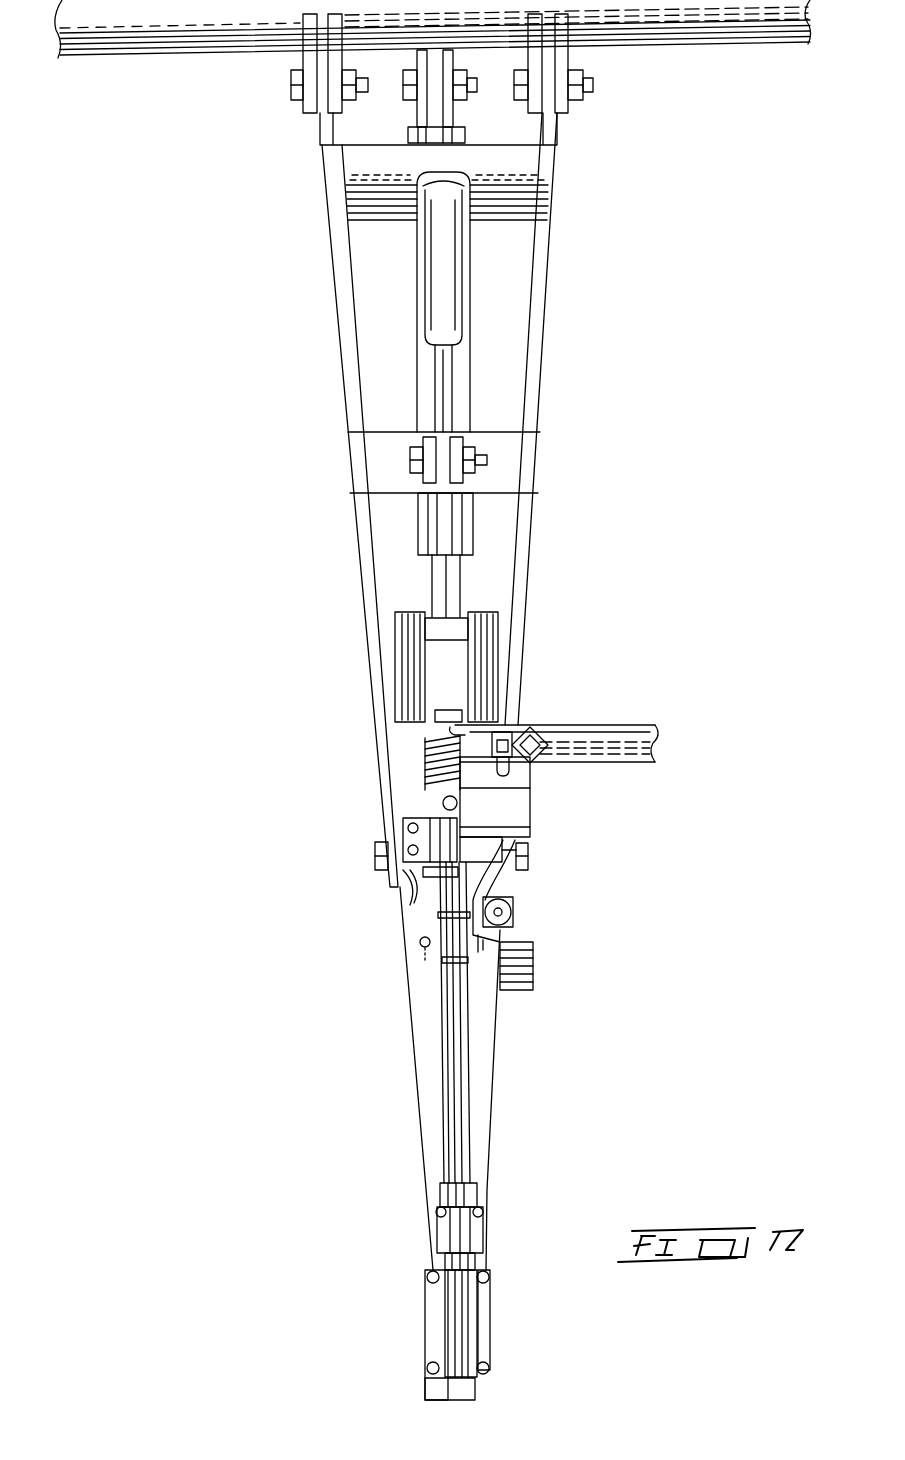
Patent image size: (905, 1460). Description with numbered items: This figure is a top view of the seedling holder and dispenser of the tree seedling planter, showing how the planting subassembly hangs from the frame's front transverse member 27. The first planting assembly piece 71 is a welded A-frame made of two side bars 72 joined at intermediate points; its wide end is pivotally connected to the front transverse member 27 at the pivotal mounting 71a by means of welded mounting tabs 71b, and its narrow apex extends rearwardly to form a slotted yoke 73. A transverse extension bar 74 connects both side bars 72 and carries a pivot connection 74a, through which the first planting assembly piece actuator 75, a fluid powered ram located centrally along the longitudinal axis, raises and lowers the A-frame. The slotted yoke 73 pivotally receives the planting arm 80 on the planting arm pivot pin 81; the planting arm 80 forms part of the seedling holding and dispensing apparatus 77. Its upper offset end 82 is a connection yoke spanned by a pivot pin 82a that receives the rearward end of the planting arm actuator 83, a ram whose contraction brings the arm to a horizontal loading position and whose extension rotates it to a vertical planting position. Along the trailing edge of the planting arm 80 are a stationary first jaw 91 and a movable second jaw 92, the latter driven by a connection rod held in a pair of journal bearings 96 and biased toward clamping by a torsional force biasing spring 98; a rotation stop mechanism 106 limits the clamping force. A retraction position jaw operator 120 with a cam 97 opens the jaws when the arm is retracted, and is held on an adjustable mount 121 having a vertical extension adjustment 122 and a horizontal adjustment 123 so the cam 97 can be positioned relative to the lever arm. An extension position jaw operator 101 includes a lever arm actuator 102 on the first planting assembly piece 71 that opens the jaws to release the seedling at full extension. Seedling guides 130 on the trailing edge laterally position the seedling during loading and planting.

The front transverse member 27 is at (113, 25).
The first planting assembly piece 71 is at (728, 452).
The pivotal mounting 71a is at (290, 85).
The mounting tabs 71b is at (310, 60).
The side bars 72 is at (348, 383).
The slotted yoke 73 is at (403, 903).
The transverse extension bar 74 is at (366, 472).
The pivot connection 74a is at (457, 457).
The first planting assembly piece actuator 75 is at (438, 296).
The seedling holding and dispensing apparatus 77 is at (250, 1090).
The planting arm 80 is at (485, 1020).
The planting arm pivot pin 81 is at (375, 857).
The upper offset end 82 is at (410, 692).
The pivot pin 82a is at (432, 632).
The planting arm actuator 83 is at (430, 527).
The first jaw 91 is at (430, 1340).
The second jaw 92 is at (487, 1352).
The journal bearings 96 is at (410, 822).
The cam 97 is at (517, 793).
The torsional force biasing spring 98 is at (435, 760).
The extension position jaw operator 101 is at (537, 937).
The lever arm actuator 102 is at (500, 912).
The rotation stop mechanism 106 is at (413, 877).
The retraction position jaw operator 120 is at (673, 880).
The adjustable mount 121 is at (603, 797).
The vertical extension adjustment 122 is at (492, 735).
The horizontal adjustment 123 is at (612, 740).
The seedling guides 130 is at (422, 946).